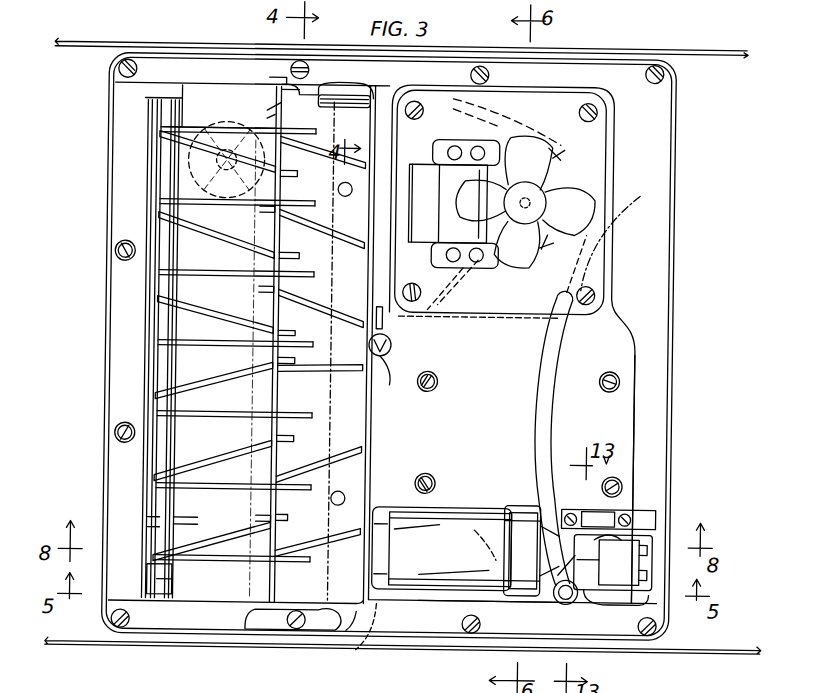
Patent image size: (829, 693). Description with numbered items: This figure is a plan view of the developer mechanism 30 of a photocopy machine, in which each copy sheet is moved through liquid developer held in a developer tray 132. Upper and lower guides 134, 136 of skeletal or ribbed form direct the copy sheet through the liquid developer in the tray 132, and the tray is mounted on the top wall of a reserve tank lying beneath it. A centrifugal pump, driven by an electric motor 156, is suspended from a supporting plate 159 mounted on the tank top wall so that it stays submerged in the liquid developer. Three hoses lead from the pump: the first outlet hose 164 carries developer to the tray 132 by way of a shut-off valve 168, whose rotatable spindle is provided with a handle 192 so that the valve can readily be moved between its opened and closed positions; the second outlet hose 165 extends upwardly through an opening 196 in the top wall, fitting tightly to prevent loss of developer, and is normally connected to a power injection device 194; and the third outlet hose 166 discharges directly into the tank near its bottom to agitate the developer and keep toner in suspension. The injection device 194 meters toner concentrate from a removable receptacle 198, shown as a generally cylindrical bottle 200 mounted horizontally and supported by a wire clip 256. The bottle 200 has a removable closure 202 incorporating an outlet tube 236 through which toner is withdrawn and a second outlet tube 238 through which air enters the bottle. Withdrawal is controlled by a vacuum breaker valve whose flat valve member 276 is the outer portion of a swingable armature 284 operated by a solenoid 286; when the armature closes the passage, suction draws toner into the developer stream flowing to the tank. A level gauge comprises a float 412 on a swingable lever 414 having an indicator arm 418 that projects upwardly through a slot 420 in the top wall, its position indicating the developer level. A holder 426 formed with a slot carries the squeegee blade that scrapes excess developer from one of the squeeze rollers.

The developer mechanism 30 is at (90, 94).
The developer tray 132 is at (204, 90).
The upper guide 134 is at (238, 312).
The lower guide 136 is at (300, 439).
The electric motor 156 is at (563, 168).
The supporting plate 159 is at (590, 269).
The first outlet hose 164 is at (443, 317).
The second outlet hose 165 is at (552, 410).
The third outlet hose 166 is at (498, 110).
The shut-off valve 168 is at (408, 388).
The handle 192 is at (392, 343).
The power injection device 194 is at (622, 499).
The opening 196 is at (598, 246).
The removable receptacle 198 is at (360, 650).
The bottle 200 is at (438, 511).
The removable closure 202 is at (523, 517).
The outlet tube 236 is at (482, 581).
The second outlet tube 238 is at (497, 527).
The wire clip 256 is at (404, 485).
The valve member 276 is at (598, 596).
The swingable armature 284 is at (624, 597).
The solenoid 286 is at (642, 517).
The float 412 is at (235, 126).
The lever 414 is at (277, 102).
The indicator arm 418 is at (362, 86).
The slot 420 is at (334, 96).
The holder 426 is at (180, 524).